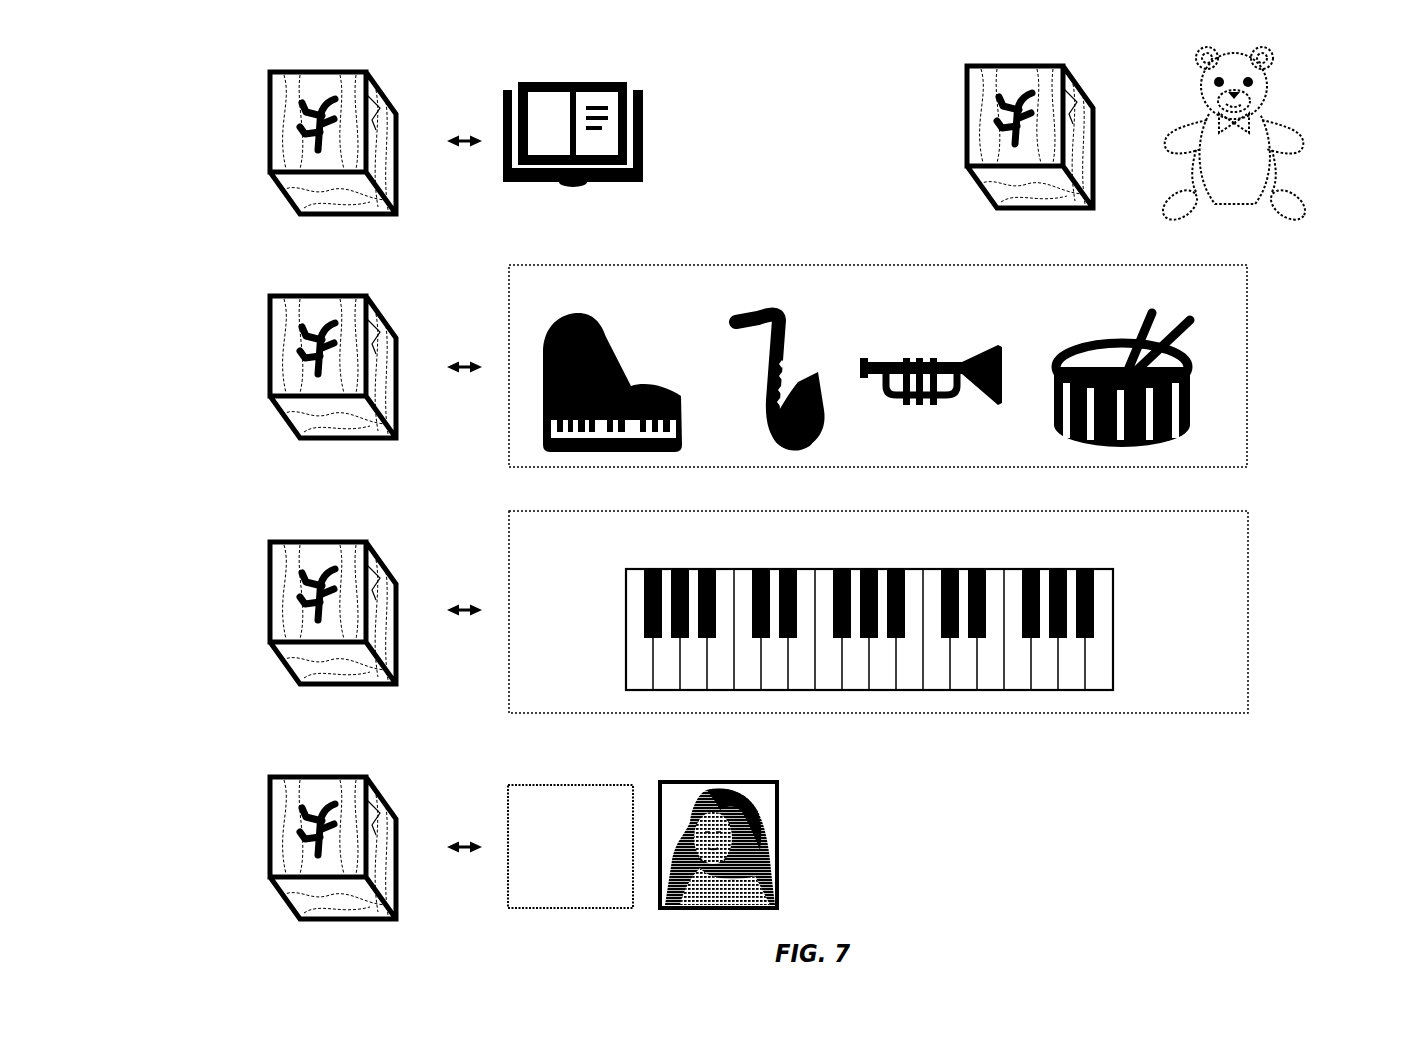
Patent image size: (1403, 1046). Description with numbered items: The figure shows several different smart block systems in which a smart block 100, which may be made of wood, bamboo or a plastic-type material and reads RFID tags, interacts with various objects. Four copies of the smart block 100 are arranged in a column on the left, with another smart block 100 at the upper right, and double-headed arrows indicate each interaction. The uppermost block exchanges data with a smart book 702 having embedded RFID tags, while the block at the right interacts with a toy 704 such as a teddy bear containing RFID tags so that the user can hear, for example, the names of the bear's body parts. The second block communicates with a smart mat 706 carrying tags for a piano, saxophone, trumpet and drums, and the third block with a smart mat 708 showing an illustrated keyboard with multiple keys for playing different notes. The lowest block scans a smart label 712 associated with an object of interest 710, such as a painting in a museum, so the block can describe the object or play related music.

The smart block 100 is at (965, 110).
The smart book 702 is at (646, 93).
The toy 704 is at (1285, 107).
The smart mat 706 is at (941, 296).
The smart mat 708 is at (941, 542).
The object of interest 710 is at (778, 837).
The smart label 712 is at (585, 878).